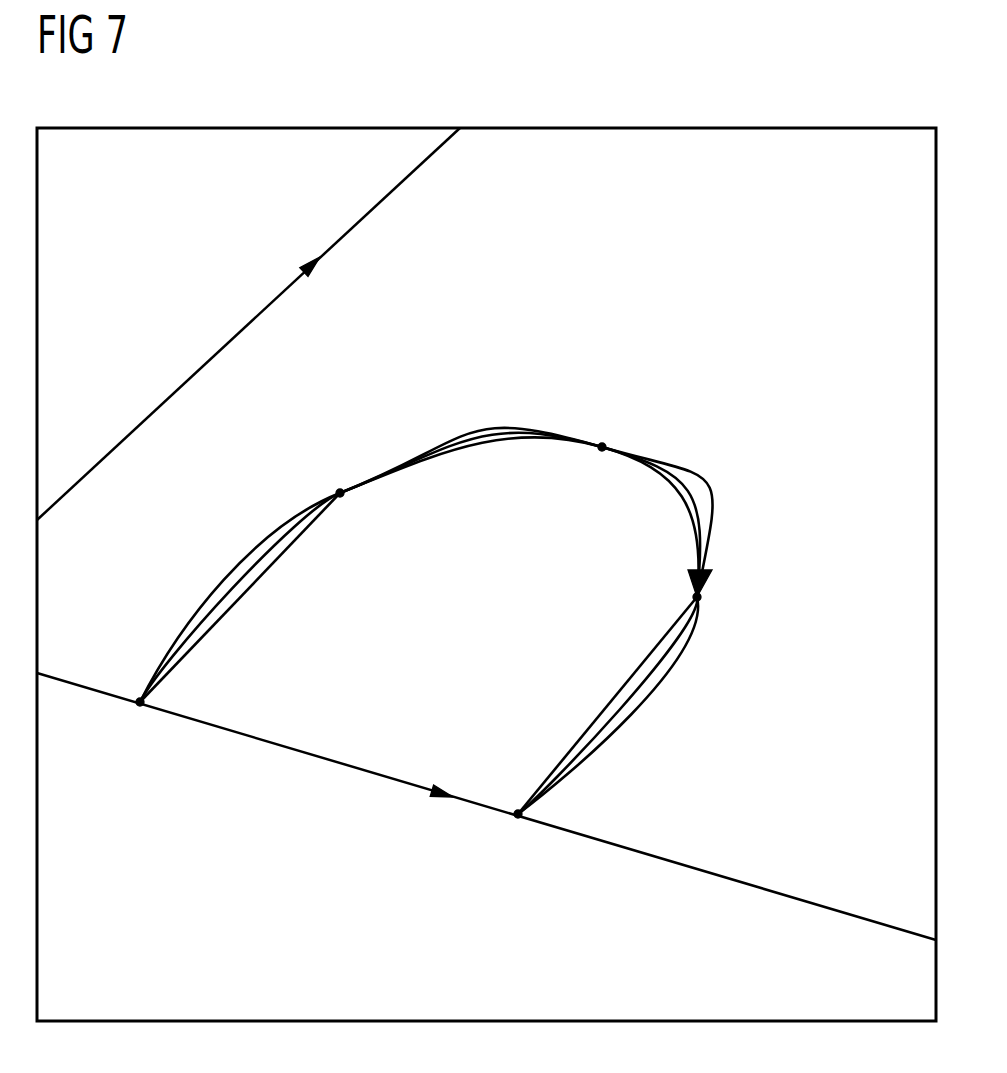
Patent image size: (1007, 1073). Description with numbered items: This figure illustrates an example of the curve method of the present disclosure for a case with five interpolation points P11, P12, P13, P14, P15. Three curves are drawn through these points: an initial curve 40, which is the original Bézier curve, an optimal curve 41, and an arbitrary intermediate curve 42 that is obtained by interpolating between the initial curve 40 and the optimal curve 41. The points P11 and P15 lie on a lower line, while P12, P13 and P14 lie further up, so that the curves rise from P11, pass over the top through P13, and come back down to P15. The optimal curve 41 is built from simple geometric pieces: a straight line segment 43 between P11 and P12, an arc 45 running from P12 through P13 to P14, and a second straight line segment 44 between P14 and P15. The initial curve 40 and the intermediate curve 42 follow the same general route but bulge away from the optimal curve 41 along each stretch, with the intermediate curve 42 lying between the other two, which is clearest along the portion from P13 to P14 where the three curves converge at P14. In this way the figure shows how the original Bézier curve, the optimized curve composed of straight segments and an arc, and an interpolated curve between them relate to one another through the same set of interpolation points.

The initial curve 40 is at (640, 708).
The optimal curve 41 is at (711, 520).
The intermediate curve 42 is at (703, 540).
The straight line segment 43 is at (270, 634).
The straight line segment 44 is at (585, 705).
The arc 45 is at (587, 486).
The interpolation point P11 is at (137, 722).
The interpolation point P12 is at (322, 474).
The interpolation point P13 is at (613, 428).
The interpolation point P14 is at (723, 602).
The interpolation point P15 is at (518, 836).